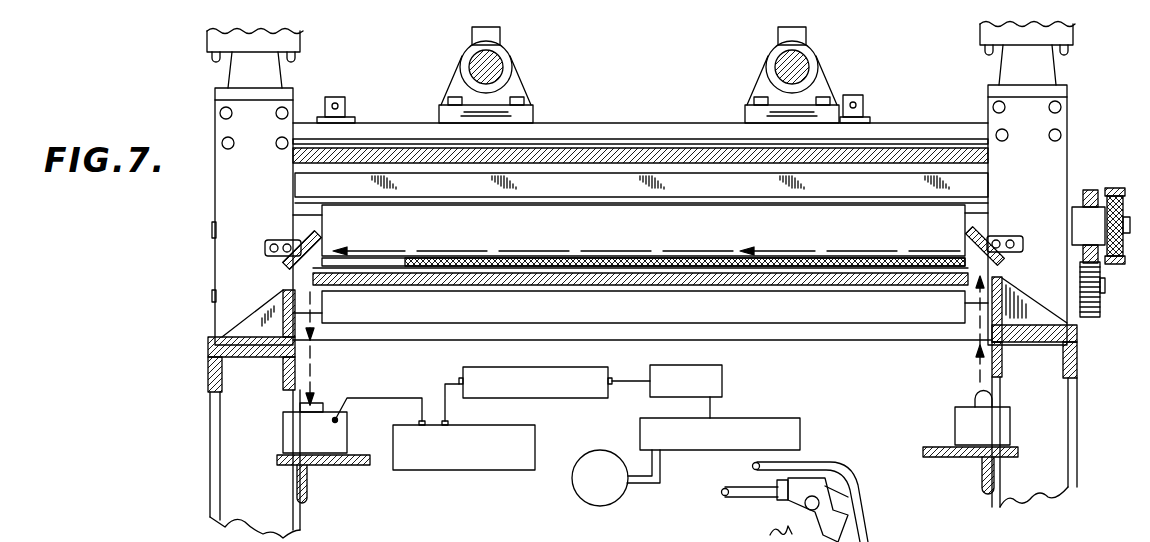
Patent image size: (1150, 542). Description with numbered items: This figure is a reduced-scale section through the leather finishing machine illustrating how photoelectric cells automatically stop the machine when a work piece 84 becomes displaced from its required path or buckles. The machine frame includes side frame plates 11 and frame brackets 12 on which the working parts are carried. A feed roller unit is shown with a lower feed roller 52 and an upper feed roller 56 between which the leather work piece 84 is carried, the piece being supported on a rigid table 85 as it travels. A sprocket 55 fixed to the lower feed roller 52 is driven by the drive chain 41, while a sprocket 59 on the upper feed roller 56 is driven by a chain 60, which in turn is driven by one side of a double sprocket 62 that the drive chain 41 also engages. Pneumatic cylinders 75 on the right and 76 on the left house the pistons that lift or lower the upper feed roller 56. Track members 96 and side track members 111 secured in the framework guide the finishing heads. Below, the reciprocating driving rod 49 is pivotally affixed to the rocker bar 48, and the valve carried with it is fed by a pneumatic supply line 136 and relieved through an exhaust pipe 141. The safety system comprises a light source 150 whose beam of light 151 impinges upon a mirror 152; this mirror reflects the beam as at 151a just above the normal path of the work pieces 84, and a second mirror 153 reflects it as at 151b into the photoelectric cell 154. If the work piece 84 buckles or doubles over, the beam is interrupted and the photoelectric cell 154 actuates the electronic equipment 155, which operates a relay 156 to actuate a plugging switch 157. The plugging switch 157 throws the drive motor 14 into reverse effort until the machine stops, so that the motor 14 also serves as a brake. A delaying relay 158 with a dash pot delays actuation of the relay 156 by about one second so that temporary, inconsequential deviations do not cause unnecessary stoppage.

The pneumatic cylinder 76 is at (301, 31).
The pneumatic cylinder 75 is at (982, 22).
The track member 96 is at (652, 145).
The side track member 111 is at (301, 179).
The upper feed roller 56 is at (640, 230).
The reflected light beam 151a is at (453, 249).
The work piece 84 is at (519, 256).
The table 85 is at (715, 284).
The lower feed roller 52 is at (638, 323).
The second mirror 153 is at (300, 243).
The mirror 152 is at (988, 240).
The double sprocket 62 is at (1088, 189).
The drive chain 41 is at (1114, 186).
The chain 60 is at (1128, 183).
The sprocket 59 is at (1106, 264).
The sprocket 55 is at (1100, 302).
The frame bracket 12 is at (207, 365).
The frame plate 11 is at (238, 420).
The reflected light beam 151b is at (315, 378).
The beam of light 151 is at (979, 378).
The photoelectric cell 154 is at (283, 444).
The light source 150 is at (1010, 422).
The delaying relay 158 is at (477, 368).
The relay 156 is at (724, 384).
The plugging switch 157 is at (756, 417).
The electronic equipment 155 is at (415, 470).
The drive motor 14 is at (606, 451).
The exhaust pipe 141 is at (823, 463).
The supply line 136 is at (754, 468).
The driving rod 49 is at (727, 496).
The rocker bar 48 is at (820, 524).